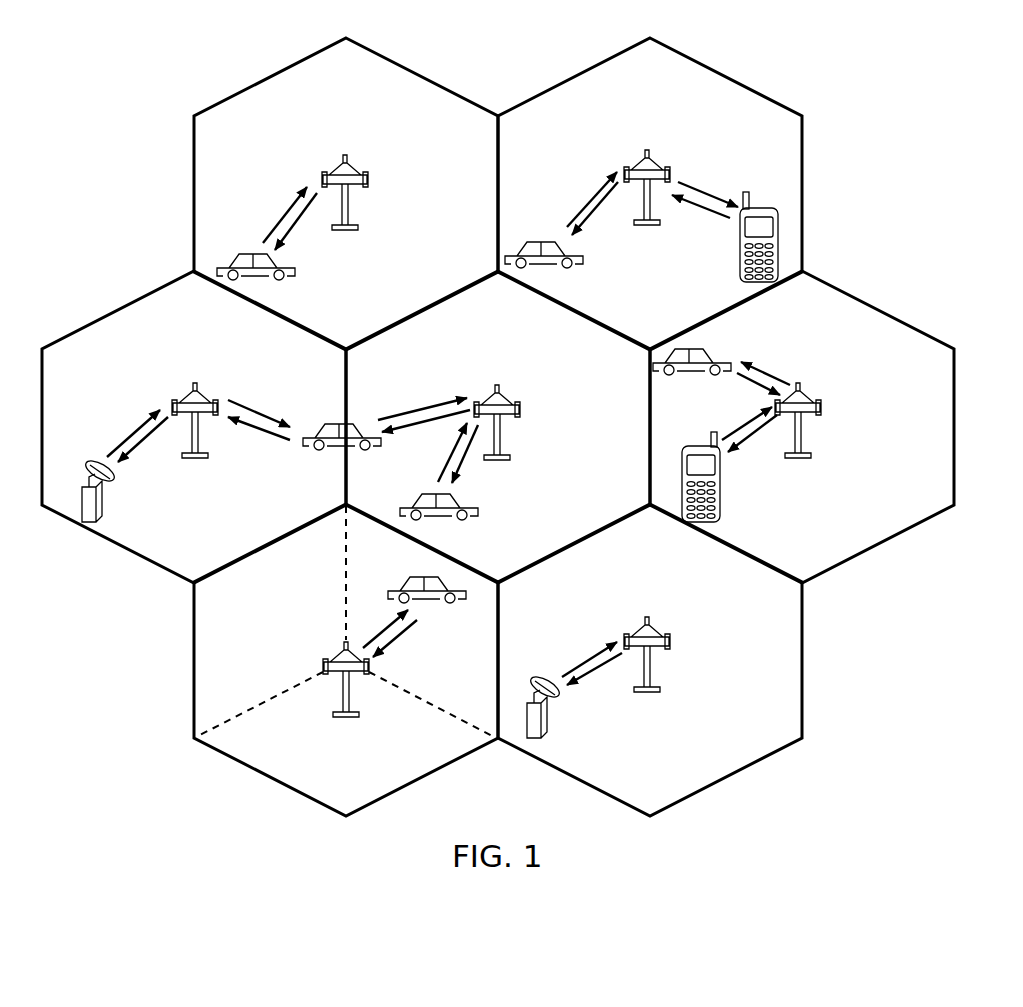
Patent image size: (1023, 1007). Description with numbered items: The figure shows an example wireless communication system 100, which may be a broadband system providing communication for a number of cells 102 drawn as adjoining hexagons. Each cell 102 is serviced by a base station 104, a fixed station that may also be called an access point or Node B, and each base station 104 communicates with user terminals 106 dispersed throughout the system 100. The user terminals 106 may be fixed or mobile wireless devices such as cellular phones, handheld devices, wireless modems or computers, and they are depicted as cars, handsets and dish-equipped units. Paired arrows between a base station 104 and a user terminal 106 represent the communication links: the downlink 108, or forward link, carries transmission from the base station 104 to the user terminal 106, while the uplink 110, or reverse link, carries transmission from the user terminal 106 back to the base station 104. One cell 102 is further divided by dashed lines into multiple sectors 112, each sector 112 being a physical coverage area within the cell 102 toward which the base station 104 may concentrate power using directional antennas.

The wireless communication system 100 is at (933, 122).
The cell 102 is at (280, 70).
The base station 104 is at (346, 155).
The user terminal 106 is at (293, 272).
The downlink 108 is at (294, 233).
The uplink 110 is at (286, 208).
The sector 112 is at (400, 773).